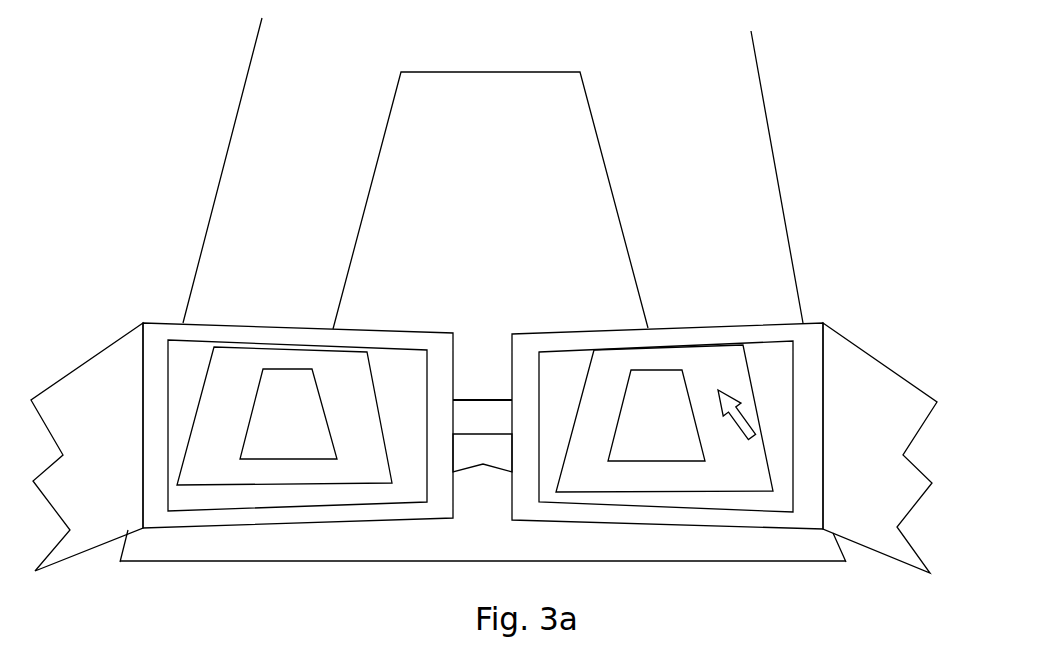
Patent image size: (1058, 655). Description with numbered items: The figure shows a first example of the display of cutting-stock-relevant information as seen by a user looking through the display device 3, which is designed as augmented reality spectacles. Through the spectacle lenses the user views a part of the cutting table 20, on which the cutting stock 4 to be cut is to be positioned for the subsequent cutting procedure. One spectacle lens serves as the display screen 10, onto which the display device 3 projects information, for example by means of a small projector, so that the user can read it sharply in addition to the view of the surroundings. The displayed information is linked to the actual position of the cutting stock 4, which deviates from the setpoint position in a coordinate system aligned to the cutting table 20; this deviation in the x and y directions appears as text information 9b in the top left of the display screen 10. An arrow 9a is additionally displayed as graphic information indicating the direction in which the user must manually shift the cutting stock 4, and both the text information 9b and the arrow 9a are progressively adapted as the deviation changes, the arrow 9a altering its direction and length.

The display device 3 is at (153, 335).
The cutting stock 4 is at (412, 252).
The arrow 9a is at (750, 410).
The text information 9b is at (542, 372).
The display screen 10 is at (752, 357).
The cutting table 20 is at (315, 203).